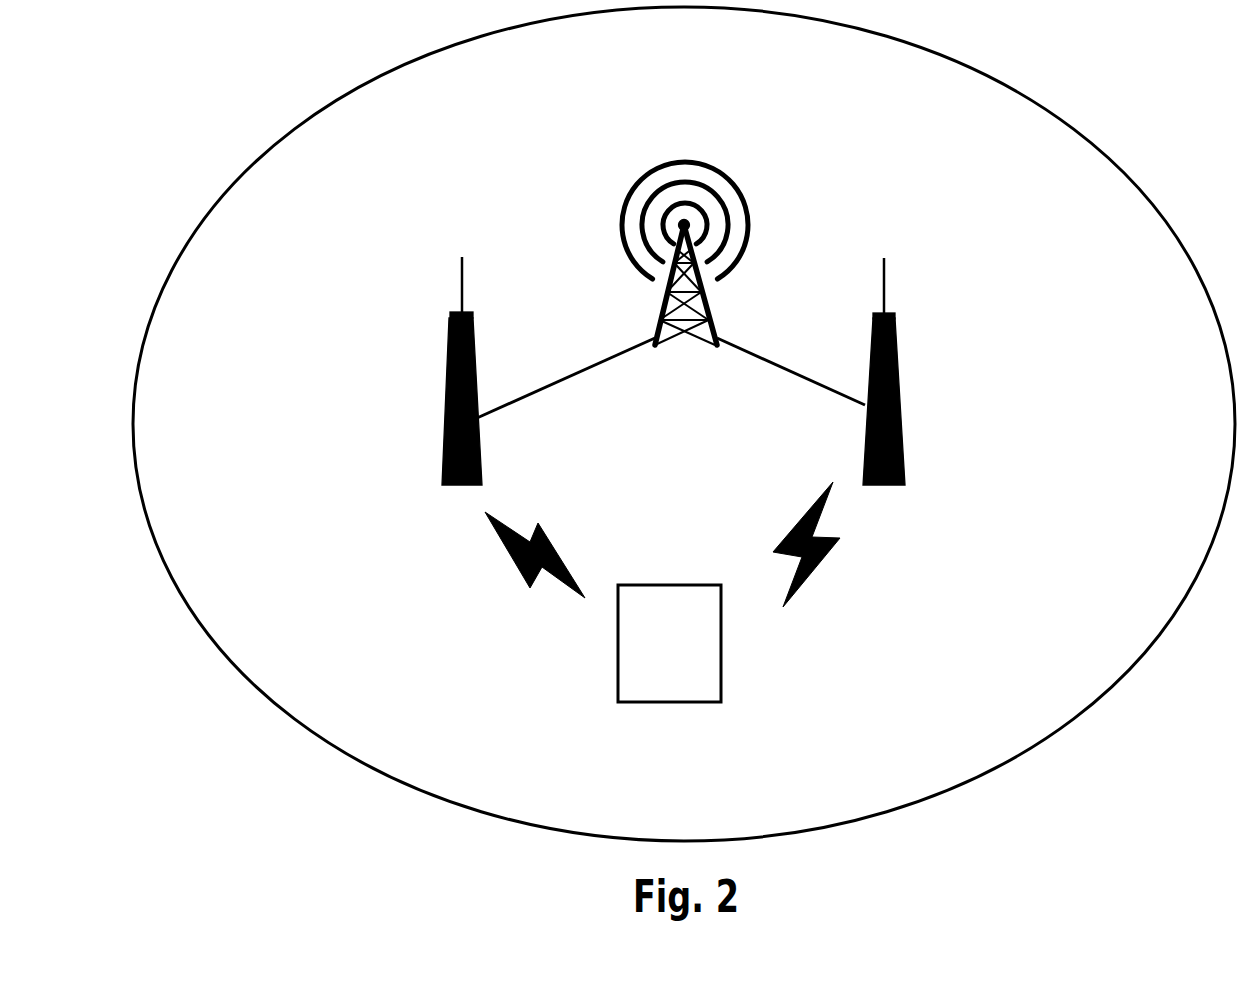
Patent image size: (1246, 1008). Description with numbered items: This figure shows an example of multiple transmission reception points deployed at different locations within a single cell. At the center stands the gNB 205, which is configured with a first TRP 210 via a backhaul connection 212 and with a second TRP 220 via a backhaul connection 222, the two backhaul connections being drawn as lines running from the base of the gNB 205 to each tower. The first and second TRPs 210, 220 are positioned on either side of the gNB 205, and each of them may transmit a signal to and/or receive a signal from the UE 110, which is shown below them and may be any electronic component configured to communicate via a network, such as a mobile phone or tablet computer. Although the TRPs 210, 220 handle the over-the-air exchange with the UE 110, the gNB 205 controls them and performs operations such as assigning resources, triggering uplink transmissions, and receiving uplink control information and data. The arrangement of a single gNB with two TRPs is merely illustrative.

The gNB 205 is at (685, 267).
The first TRP 210 is at (435, 371).
The second TRP 220 is at (911, 371).
The backhaul connection 212 is at (566, 378).
The backhaul connection 222 is at (791, 371).
The UE 110 is at (669, 643).